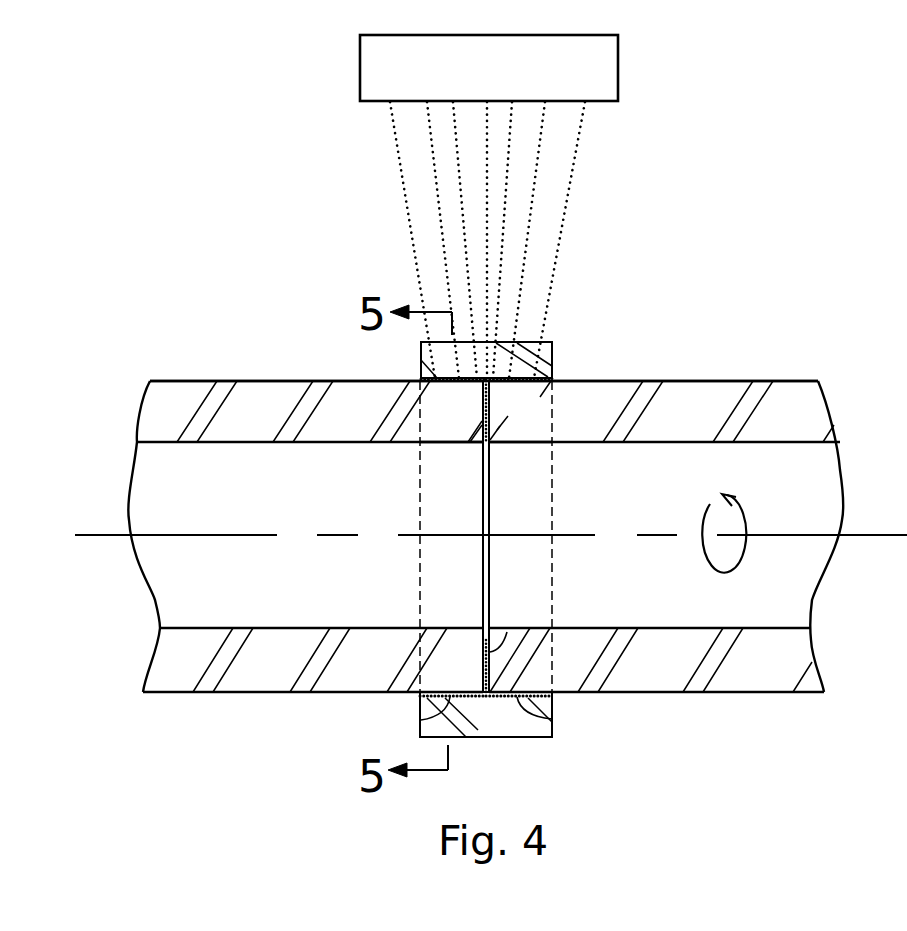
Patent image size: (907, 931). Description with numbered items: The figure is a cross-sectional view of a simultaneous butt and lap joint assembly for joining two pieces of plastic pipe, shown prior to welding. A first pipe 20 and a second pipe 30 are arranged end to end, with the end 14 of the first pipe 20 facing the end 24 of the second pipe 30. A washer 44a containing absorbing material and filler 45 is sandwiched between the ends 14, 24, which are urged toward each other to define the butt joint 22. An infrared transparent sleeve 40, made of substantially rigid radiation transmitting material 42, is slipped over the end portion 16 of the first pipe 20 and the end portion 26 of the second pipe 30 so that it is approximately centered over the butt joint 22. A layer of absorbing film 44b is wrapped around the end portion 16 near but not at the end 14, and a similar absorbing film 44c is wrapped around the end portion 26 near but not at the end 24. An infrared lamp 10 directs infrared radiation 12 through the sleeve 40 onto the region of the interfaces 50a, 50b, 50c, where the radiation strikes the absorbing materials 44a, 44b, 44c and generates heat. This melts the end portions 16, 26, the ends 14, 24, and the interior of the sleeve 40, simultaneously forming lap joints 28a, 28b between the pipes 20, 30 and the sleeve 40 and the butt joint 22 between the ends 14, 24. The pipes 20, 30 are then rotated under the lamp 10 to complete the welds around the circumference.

The infrared lamp 10 is at (500, 81).
The infrared radiation 12 is at (404, 196).
The end of first pipe 14 is at (483, 568).
The end portion of first pipe 16 is at (470, 509).
The first pipe 20 is at (154, 478).
The butt joint 22 is at (485, 698).
The end of second pipe 24 is at (490, 569).
The end portion of second pipe 26 is at (545, 509).
The lap joint 28a is at (426, 698).
The lap joint 28b is at (543, 712).
The second pipe 30 is at (825, 481).
The infrared transparent sleeve 40 is at (425, 343).
The radiation transmitting material 42 is at (182, 391).
The washer 44a is at (480, 426).
The absorbing film 44b is at (428, 378).
The absorbing film 44c is at (553, 379).
The filler 45 is at (500, 640).
The interface 50a is at (483, 670).
The interface 50b is at (452, 383).
The interface 50c is at (523, 383).